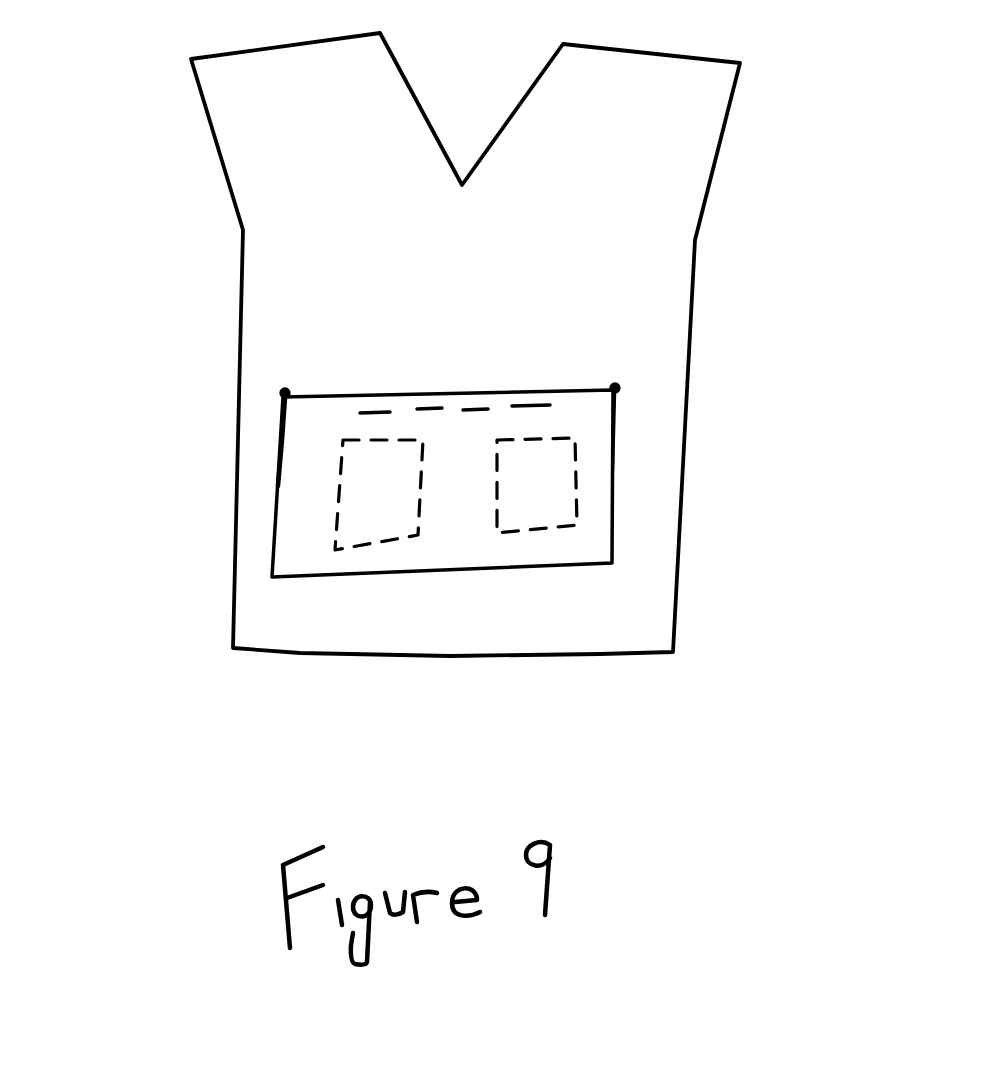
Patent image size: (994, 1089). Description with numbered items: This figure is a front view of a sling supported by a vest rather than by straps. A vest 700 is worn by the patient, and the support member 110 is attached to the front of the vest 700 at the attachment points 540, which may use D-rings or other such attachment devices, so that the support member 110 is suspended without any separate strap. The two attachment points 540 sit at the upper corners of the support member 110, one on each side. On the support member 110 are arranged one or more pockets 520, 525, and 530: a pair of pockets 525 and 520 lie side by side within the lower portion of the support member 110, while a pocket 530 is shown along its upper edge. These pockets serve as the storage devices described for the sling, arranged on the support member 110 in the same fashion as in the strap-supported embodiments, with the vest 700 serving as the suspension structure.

The vest 700 is at (695, 240).
The support member 110 is at (607, 518).
The pocket 530 is at (473, 397).
The pocket 525 is at (343, 507).
The pocket 520 is at (577, 473).
The attachment points 540 is at (848, 315).